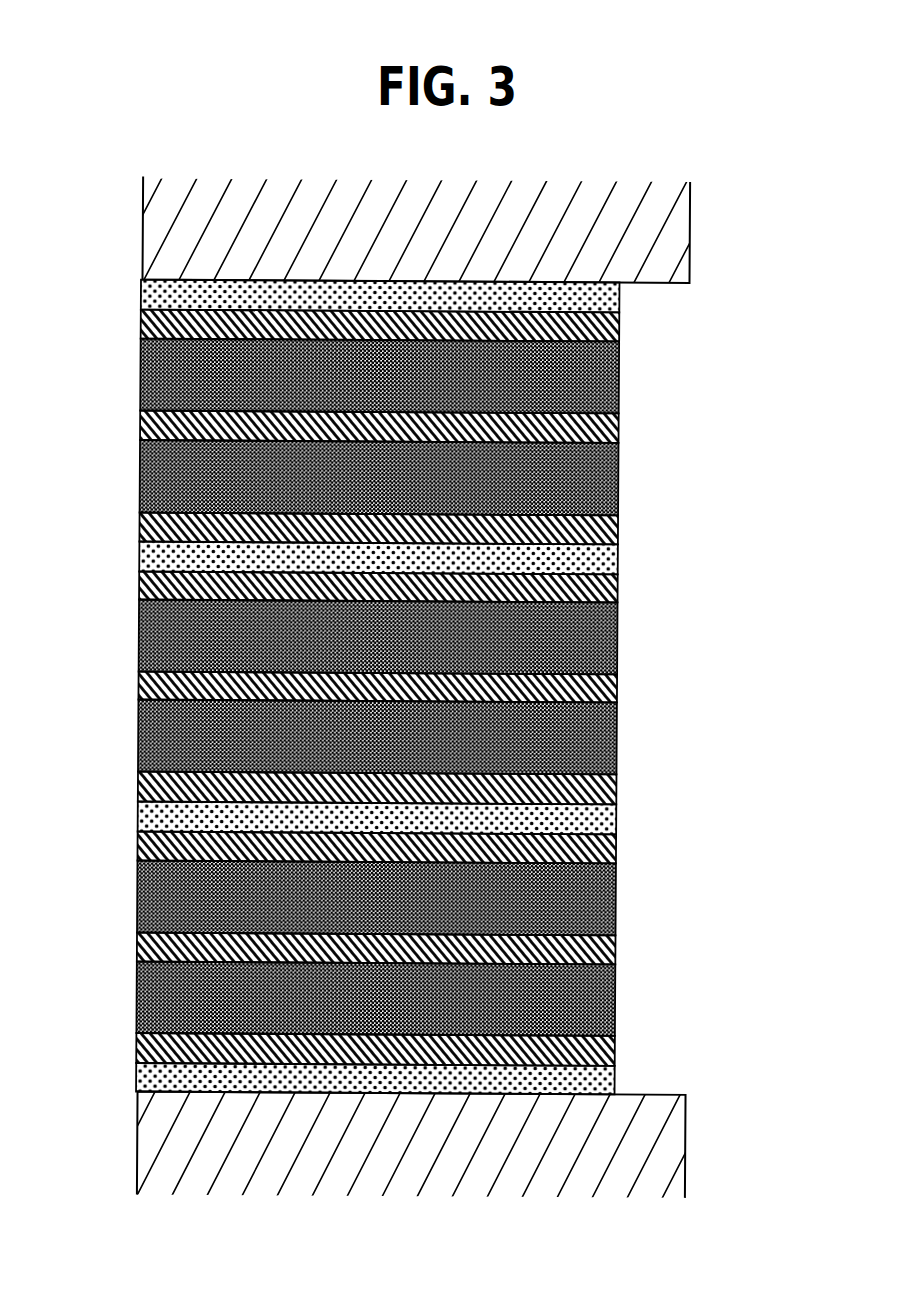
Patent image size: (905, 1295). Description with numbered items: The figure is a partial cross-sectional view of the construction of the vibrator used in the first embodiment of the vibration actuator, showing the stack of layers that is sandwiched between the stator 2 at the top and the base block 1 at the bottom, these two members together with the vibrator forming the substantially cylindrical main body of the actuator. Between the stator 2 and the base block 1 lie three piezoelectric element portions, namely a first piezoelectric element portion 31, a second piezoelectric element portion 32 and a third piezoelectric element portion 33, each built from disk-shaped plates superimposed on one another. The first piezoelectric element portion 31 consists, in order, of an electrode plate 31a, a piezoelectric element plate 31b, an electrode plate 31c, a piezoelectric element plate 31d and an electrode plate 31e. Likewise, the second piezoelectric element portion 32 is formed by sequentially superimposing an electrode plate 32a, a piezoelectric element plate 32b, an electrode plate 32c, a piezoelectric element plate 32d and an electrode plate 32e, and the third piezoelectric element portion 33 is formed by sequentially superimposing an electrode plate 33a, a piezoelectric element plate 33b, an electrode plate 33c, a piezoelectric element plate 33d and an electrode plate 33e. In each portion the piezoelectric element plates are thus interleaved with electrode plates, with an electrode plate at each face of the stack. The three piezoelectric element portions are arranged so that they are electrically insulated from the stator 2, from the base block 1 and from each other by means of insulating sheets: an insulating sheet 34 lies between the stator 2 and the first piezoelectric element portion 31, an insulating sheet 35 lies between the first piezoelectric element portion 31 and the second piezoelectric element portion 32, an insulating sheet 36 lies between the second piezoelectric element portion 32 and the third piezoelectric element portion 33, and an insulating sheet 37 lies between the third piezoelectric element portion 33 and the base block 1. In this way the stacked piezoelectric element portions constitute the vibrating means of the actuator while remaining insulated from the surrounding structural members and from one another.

The base block 1 is at (685, 1153).
The stator 2 is at (690, 229).
The first piezoelectric element portion 31 is at (123, 308).
The electrode plate 31a is at (618, 328).
The piezoelectric element plate 31b is at (618, 379).
The electrode plate 31c is at (618, 428).
The piezoelectric element plate 31d is at (618, 478).
The electrode plate 31e is at (618, 528).
The second piezoelectric element portion 32 is at (123, 572).
The electrode plate 32a is at (618, 588).
The piezoelectric element plate 32b is at (618, 640).
The electrode plate 32c is at (618, 688).
The piezoelectric element plate 32d is at (618, 738).
The electrode plate 32e is at (618, 788).
The third piezoelectric element portion 33 is at (123, 832).
The electrode plate 33a is at (618, 848).
The piezoelectric element plate 33b is at (618, 900).
The electrode plate 33c is at (618, 948).
The piezoelectric element plate 33d is at (618, 998).
The electrode plate 33e is at (618, 1050).
The insulating sheet 34 is at (140, 295).
The insulating sheet 35 is at (140, 556).
The insulating sheet 36 is at (138, 817).
The insulating sheet 37 is at (137, 1080).